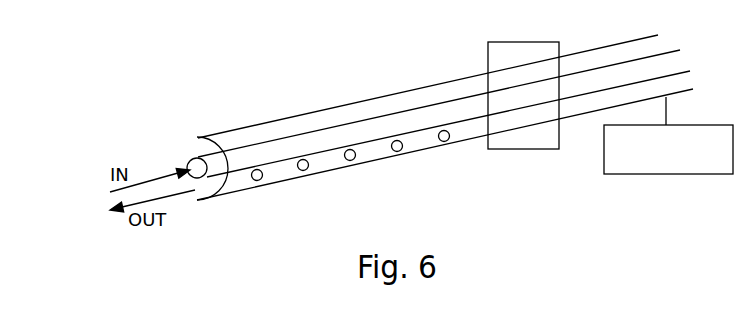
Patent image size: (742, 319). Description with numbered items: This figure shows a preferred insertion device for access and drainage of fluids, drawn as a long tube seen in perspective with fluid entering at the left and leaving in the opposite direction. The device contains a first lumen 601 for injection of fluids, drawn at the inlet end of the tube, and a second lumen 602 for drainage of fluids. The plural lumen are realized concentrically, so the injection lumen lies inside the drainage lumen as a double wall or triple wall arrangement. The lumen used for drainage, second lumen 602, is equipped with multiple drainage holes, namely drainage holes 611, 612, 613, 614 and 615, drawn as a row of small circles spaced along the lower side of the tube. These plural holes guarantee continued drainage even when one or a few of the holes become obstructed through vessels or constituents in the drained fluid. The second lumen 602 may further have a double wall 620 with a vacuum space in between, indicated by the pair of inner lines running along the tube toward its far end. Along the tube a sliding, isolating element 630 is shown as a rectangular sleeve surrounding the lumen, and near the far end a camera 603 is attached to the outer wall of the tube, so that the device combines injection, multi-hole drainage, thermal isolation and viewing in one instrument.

The first lumen 601 is at (190, 157).
The second lumen 602 is at (253, 125).
The camera 603 is at (648, 174).
The drainage hole 611 is at (257, 181).
The drainage hole 612 is at (303, 171).
The drainage hole 613 is at (350, 161).
The drainage hole 614 is at (397, 152).
The drainage hole 615 is at (444, 142).
The double wall 620 is at (573, 116).
The sliding, isolating element 630 is at (517, 149).